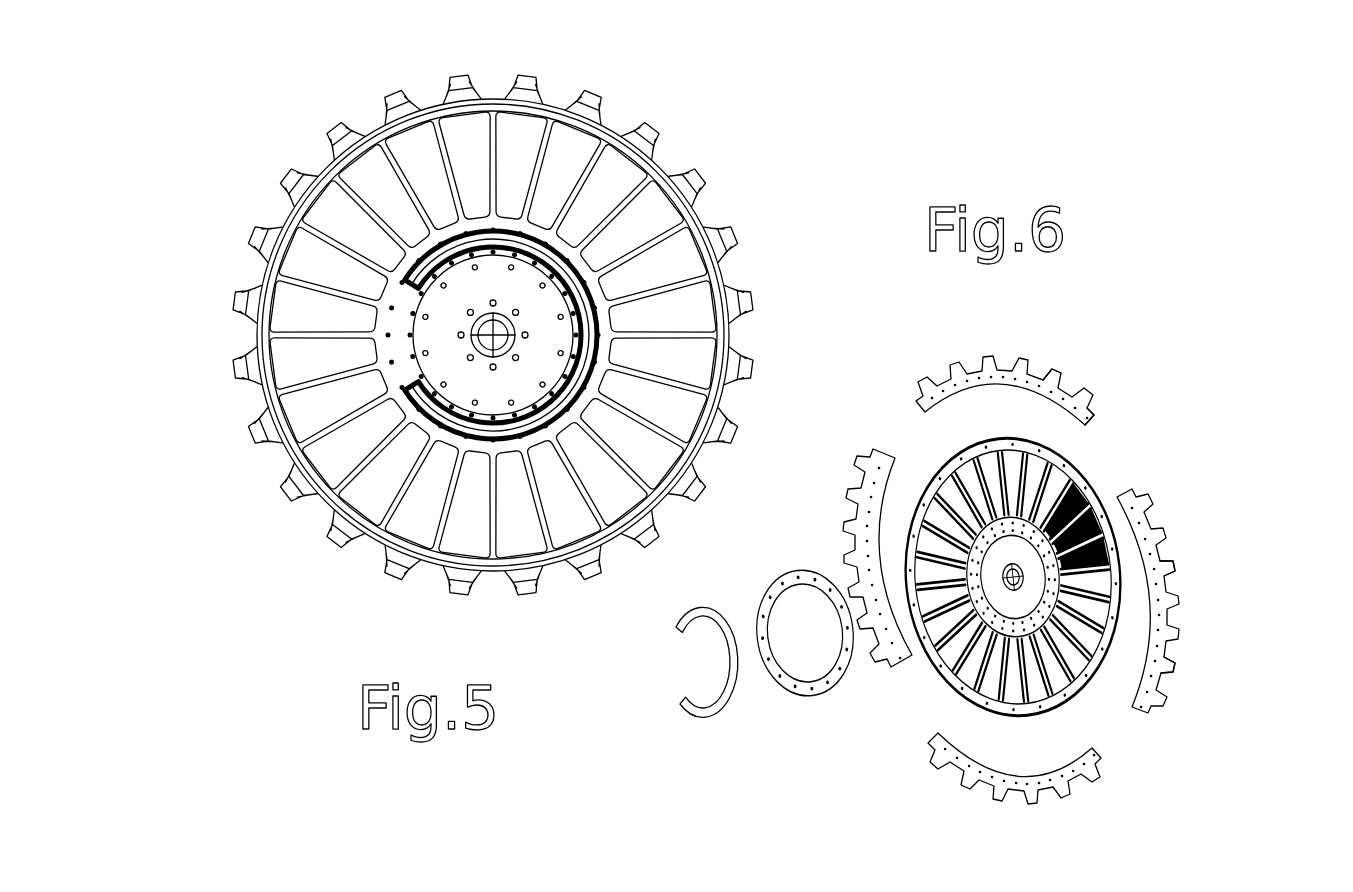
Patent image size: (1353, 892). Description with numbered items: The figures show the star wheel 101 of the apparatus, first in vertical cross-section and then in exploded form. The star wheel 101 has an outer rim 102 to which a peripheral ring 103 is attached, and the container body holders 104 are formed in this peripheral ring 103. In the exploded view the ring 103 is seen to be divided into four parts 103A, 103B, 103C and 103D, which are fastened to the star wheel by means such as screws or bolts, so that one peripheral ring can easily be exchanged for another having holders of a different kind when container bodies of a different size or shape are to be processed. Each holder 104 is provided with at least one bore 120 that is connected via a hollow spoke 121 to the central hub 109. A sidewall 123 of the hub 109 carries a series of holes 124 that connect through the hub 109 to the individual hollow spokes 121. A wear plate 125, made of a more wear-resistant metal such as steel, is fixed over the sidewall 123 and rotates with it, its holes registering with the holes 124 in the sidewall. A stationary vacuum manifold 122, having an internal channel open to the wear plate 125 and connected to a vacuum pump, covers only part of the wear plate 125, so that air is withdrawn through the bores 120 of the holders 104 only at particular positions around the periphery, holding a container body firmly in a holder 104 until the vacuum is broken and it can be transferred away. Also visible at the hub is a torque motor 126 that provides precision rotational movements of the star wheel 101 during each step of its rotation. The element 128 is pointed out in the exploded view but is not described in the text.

In FIG. 5, the star wheel 101 is at (513, 389).
In FIG. 6, the star wheel 101 is at (1140, 451).
In FIG. 6, the rim 102 is at (1002, 557).
In FIG. 5, the peripheral ring 103 is at (298, 178).
In FIG. 6, the part of peripheral ring 103A is at (932, 398).
In FIG. 6, the part of peripheral ring 103B is at (1158, 517).
In FIG. 6, the part of peripheral ring 103C is at (1107, 750).
In FIG. 6, the part of peripheral ring 103D is at (880, 450).
In FIG. 5, the container body holder 104 is at (364, 122).
In FIG. 6, the container body holder 104 is at (1040, 378).
In FIG. 5, the central hub 109 is at (485, 278).
In FIG. 6, the central hub 109 is at (1013, 577).
In FIG. 6, the bore 120 is at (1158, 543).
In FIG. 5, the hollow spoke 121 is at (583, 178).
In FIG. 5, the vacuum manifold 122 is at (438, 433).
In FIG. 6, the vacuum manifold 122 is at (693, 714).
In FIG. 5, the sidewall 123 is at (387, 318).
In FIG. 6, the sidewall 123 is at (935, 652).
In FIG. 5, the holes 124 is at (400, 343).
In FIG. 6, the wear plate 125 is at (785, 678).
In FIG. 6, the torque motor 126 is at (1073, 529).
In FIG. 6, the segment end face 128 is at (1090, 425).